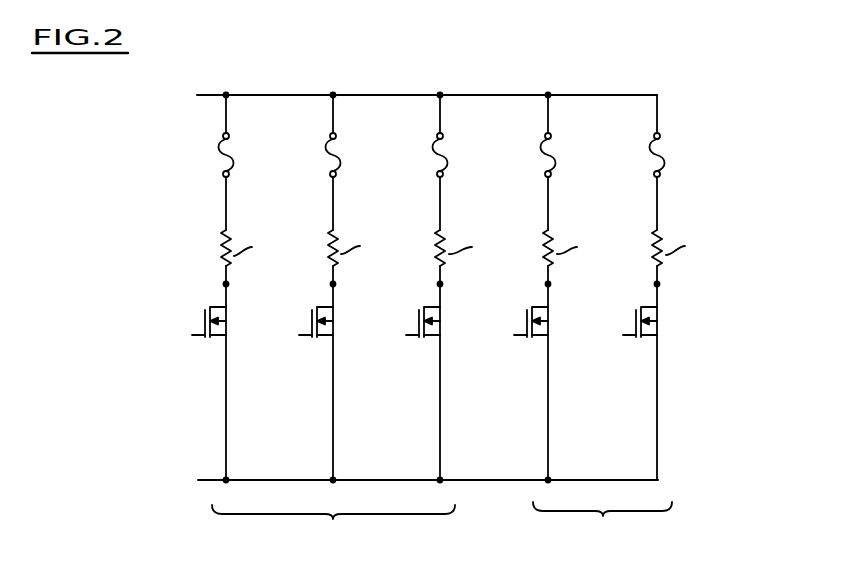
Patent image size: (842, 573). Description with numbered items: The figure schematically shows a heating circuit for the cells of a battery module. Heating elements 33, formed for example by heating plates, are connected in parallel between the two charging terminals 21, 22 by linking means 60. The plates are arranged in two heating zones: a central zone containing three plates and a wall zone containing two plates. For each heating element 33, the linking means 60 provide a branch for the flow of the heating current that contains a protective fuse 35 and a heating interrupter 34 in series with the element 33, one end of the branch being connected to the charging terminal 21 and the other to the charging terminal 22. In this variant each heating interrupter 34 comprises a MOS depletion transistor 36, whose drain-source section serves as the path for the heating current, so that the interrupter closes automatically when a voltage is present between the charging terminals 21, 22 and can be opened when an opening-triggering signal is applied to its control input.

The charging terminal 21 is at (208, 483).
The charging terminal 22 is at (216, 95).
The heating element 33 is at (222, 252).
The heating interrupter 34 is at (406, 327).
The protective fuse 35 is at (221, 147).
The transistor 36 is at (334, 325).
The linking means 60 is at (187, 376).